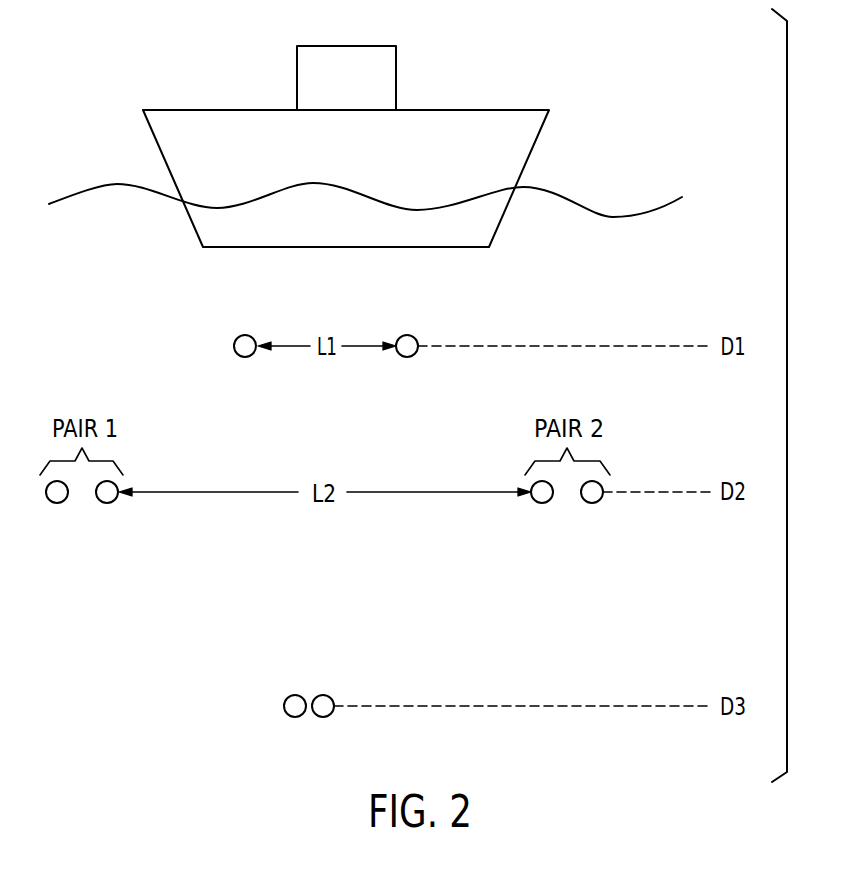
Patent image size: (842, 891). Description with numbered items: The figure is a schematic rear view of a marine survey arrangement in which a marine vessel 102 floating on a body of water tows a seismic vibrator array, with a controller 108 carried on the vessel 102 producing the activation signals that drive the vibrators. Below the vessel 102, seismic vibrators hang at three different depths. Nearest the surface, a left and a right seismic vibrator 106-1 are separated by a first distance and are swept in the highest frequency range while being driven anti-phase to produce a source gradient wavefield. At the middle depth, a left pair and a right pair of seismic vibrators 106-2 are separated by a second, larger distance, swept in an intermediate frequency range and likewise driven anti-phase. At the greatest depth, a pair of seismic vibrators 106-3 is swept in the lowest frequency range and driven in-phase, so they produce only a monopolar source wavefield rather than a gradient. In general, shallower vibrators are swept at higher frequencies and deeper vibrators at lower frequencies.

The marine vessel 102 is at (467, 110).
The controller 108 is at (330, 92).
The seismic vibrators at depth D1 106-1 is at (245, 335).
The seismic vibrators at depth D2 106-2 is at (407, 335).
The seismic vibrators at depth D3 106-3 is at (293, 695).